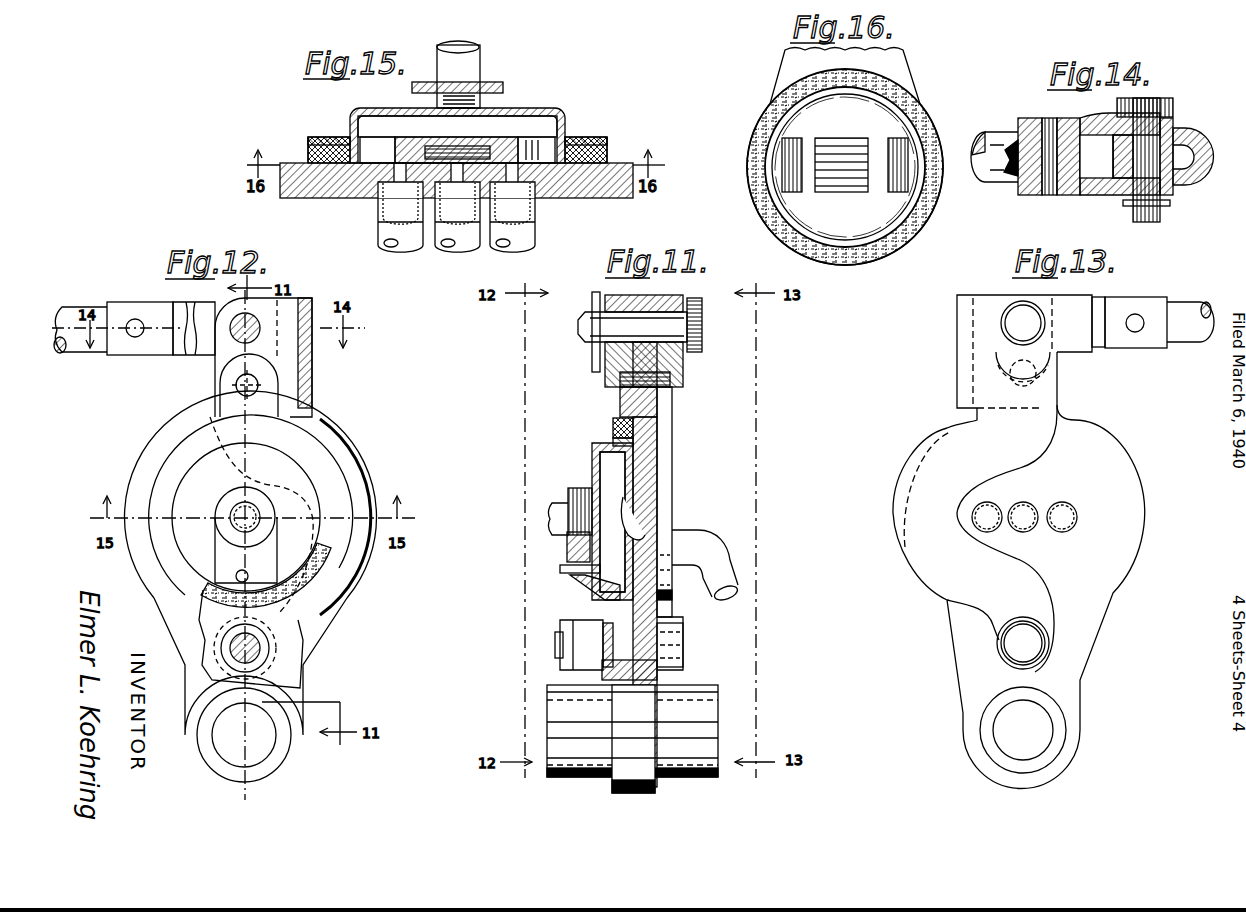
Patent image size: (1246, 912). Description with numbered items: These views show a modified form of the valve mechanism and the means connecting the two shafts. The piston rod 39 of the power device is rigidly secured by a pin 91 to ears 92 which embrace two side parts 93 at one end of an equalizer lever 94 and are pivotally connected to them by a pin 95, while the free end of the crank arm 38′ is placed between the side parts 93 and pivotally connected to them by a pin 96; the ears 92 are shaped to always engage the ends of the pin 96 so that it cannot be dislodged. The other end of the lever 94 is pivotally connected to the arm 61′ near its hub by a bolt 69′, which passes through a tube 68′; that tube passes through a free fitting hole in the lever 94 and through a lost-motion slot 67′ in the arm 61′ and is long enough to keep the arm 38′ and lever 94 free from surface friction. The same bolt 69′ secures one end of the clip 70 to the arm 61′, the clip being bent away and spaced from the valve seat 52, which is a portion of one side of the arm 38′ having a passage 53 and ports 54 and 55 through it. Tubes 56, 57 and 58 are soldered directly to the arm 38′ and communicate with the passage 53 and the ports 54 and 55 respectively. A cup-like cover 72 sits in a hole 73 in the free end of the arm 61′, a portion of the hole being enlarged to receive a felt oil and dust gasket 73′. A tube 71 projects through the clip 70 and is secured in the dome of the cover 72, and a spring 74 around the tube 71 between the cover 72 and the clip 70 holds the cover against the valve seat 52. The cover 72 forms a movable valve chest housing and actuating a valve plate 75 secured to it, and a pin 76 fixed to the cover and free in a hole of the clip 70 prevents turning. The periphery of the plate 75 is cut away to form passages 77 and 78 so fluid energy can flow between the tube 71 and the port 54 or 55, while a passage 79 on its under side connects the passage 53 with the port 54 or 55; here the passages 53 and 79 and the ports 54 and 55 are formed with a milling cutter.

In FIG. 15, the crank arm 38′ is at (612, 193).
In FIG. 14, the crank arm 38′ is at (1185, 195).
In FIG. 12, the crank arm 38′ is at (348, 553).
In FIG. 11, the crank arm 38′ is at (672, 580).
In FIG. 13, the crank arm 38′ is at (1100, 577).
In FIG. 14, the piston rod 39 is at (1000, 158).
In FIG. 12, the piston rod 39 is at (90, 342).
In FIG. 11, the piston rod 39 is at (690, 322).
In FIG. 13, the piston rod 39 is at (1185, 335).
In FIG. 15, the valve seat 52 is at (440, 150).
In FIG. 11, the valve seat 52 is at (648, 575).
In FIG. 15, the passage 53 is at (457, 217).
In FIG. 11, the passage 53 is at (646, 518).
In FIG. 15, the port 54 is at (400, 217).
In FIG. 15, the port 55 is at (512, 217).
In FIG. 15, the tube 56 is at (466, 244).
In FIG. 11, the tube 56 is at (715, 548).
In FIG. 13, the tube 56 is at (1025, 528).
In FIG. 15, the tube 57 is at (406, 246).
In FIG. 11, the tube 57 is at (735, 585).
In FIG. 13, the tube 57 is at (1063, 528).
In FIG. 15, the tube 58 is at (517, 242).
In FIG. 13, the tube 58 is at (985, 528).
In FIG. 15, the arm 61′ is at (580, 132).
In FIG. 16, the arm 61′ is at (898, 65).
In FIG. 12, the arm 61′ is at (195, 605).
In FIG. 11, the arm 61′ is at (590, 605).
In FIG. 12, the lost-motion slot 67′ is at (270, 650).
In FIG. 11, the lost-motion slot 67′ is at (597, 651).
In FIG. 12, the tube 68′ is at (262, 652).
In FIG. 11, the tube 68′ is at (683, 652).
In FIG. 12, the bolt 69′ is at (262, 680).
In FIG. 11, the bolt 69′ is at (565, 650).
In FIG. 13, the bolt 69′ is at (1030, 645).
In FIG. 15, the clip 70 is at (500, 85).
In FIG. 12, the clip 70 is at (225, 540).
In FIG. 11, the clip 70 is at (567, 548).
In FIG. 15, the tube 71 is at (480, 55).
In FIG. 12, the tube 71 is at (232, 505).
In FIG. 11, the tube 71 is at (552, 510).
In FIG. 15, the cup-like cover 72 is at (525, 110).
In FIG. 16, the cup-like cover 72 is at (878, 232).
In FIG. 12, the cup-like cover 72 is at (295, 472).
In FIG. 11, the cup-like cover 72 is at (596, 478).
In FIG. 15, the hole 73 is at (348, 130).
In FIG. 16, the hole 73 is at (846, 225).
In FIG. 11, the hole 73 is at (640, 452).
In FIG. 15, the oil and dust gasket 73′ is at (312, 155).
In FIG. 16, the oil and dust gasket 73′ is at (790, 228).
In FIG. 12, the oil and dust gasket 73′ is at (320, 563).
In FIG. 11, the oil and dust gasket 73′ is at (640, 430).
In FIG. 15, the spring 74 is at (412, 90).
In FIG. 11, the spring 74 is at (582, 492).
In FIG. 15, the valve plate 75 is at (508, 118).
In FIG. 16, the valve plate 75 is at (852, 212).
In FIG. 11, the valve plate 75 is at (603, 455).
In FIG. 12, the pin 76 is at (238, 574).
In FIG. 11, the pin 76 is at (562, 570).
In FIG. 15, the passage 77 is at (378, 152).
In FIG. 16, the passage 77 is at (793, 180).
In FIG. 15, the passage 78 is at (540, 152).
In FIG. 16, the passage 78 is at (896, 178).
In FIG. 15, the passage 79 is at (462, 158).
In FIG. 16, the passage 79 is at (845, 158).
In FIG. 11, the passage 79 is at (645, 510).
In FIG. 14, the pin 91 is at (1050, 178).
In FIG. 12, the pin 91 is at (137, 338).
In FIG. 13, the pin 91 is at (1135, 333).
In FIG. 14, the ears 92 is at (1108, 154).
In FIG. 12, the ears 92 is at (205, 360).
In FIG. 11, the ears 92 is at (606, 376).
In FIG. 13, the ears 92 is at (1050, 368).
In FIG. 14, the side parts 93 is at (1170, 125).
In FIG. 12, the side parts 93 is at (310, 360).
In FIG. 11, the side parts 93 is at (635, 305).
In FIG. 13, the side parts 93 is at (968, 396).
In FIG. 14, the equalizer lever 94 is at (1190, 148).
In FIG. 12, the equalizer lever 94 is at (366, 490).
In FIG. 11, the equalizer lever 94 is at (668, 470).
In FIG. 13, the equalizer lever 94 is at (1025, 465).
In FIG. 14, the pin 95 is at (1100, 195).
In FIG. 12, the pin 95 is at (250, 322).
In FIG. 11, the pin 95 is at (608, 325).
In FIG. 13, the pin 95 is at (1030, 327).
In FIG. 12, the pin 96 is at (238, 388).
In FIG. 11, the pin 96 is at (620, 400).
In FIG. 13, the pin 96 is at (1030, 395).